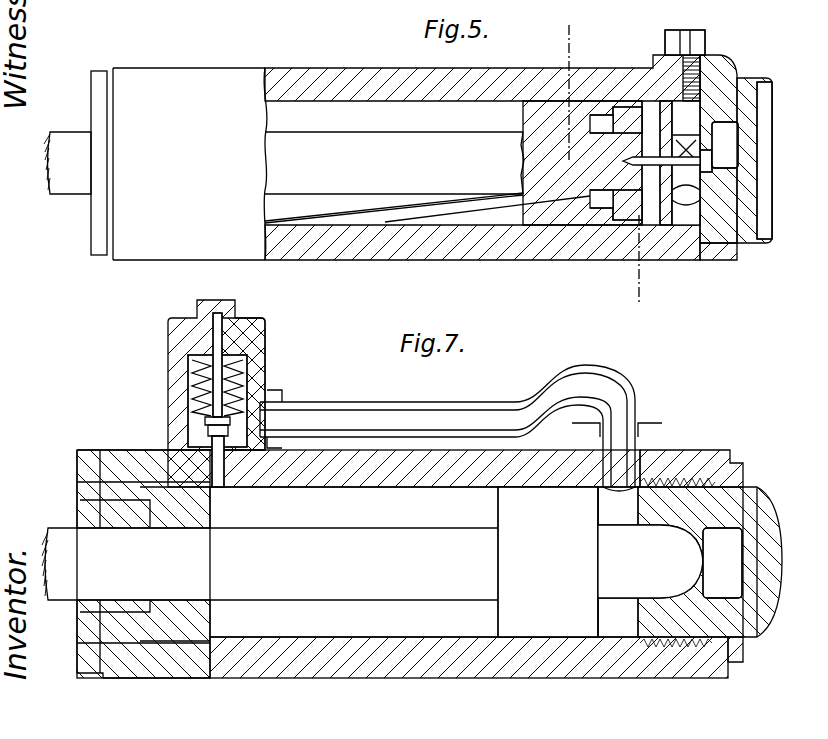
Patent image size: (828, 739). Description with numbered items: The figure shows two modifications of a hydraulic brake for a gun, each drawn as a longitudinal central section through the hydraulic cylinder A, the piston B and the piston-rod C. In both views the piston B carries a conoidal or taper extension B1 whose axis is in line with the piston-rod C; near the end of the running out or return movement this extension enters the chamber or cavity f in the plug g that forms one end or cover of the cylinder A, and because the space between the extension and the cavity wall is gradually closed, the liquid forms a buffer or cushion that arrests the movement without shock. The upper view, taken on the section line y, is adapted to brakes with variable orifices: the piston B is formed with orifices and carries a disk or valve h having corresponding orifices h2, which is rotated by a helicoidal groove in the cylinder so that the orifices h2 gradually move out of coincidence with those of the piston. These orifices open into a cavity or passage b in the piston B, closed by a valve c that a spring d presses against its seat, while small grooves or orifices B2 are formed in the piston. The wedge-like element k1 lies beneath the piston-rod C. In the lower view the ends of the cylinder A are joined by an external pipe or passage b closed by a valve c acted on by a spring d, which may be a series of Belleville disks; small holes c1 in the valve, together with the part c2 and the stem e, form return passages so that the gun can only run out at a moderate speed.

In FIG. 5, the hydraulic cylinder A is at (425, 165).
In FIG. 7, the hydraulic cylinder A is at (410, 568).
In FIG. 5, the piston B is at (655, 98).
In FIG. 7, the piston B is at (600, 562).
In FIG. 5, the conoidal or taper extension B1 is at (718, 149).
In FIG. 5, the small grooves or orifices B2 is at (664, 98).
In FIG. 5, the piston-rod C is at (394, 163).
In FIG. 7, the piston-rod C is at (270, 564).
In FIG. 5, the cavity or passage b is at (651, 163).
In FIG. 7, the cavity or passage b is at (461, 426).
In FIG. 5, the valve c is at (678, 163).
In FIG. 7, the small holes c1 is at (209, 423).
In FIG. 7, the valve seat c2 is at (228, 427).
In FIG. 5, the spring d is at (686, 205).
In FIG. 7, the spring d is at (190, 366).
In FIG. 7, the valve stem e is at (217, 460).
In FIG. 5, the chamber or cavity f is at (725, 145).
In FIG. 7, the chamber or cavity f is at (722, 563).
In FIG. 5, the plug g is at (764, 160).
In FIG. 7, the plug g is at (699, 562).
In FIG. 5, the disk or valve h is at (627, 163).
In FIG. 5, the orifices h2 is at (612, 116).
In FIG. 5, the wedge k1 is at (427, 209).
In FIG. 5, the section line y is at (603, 164).